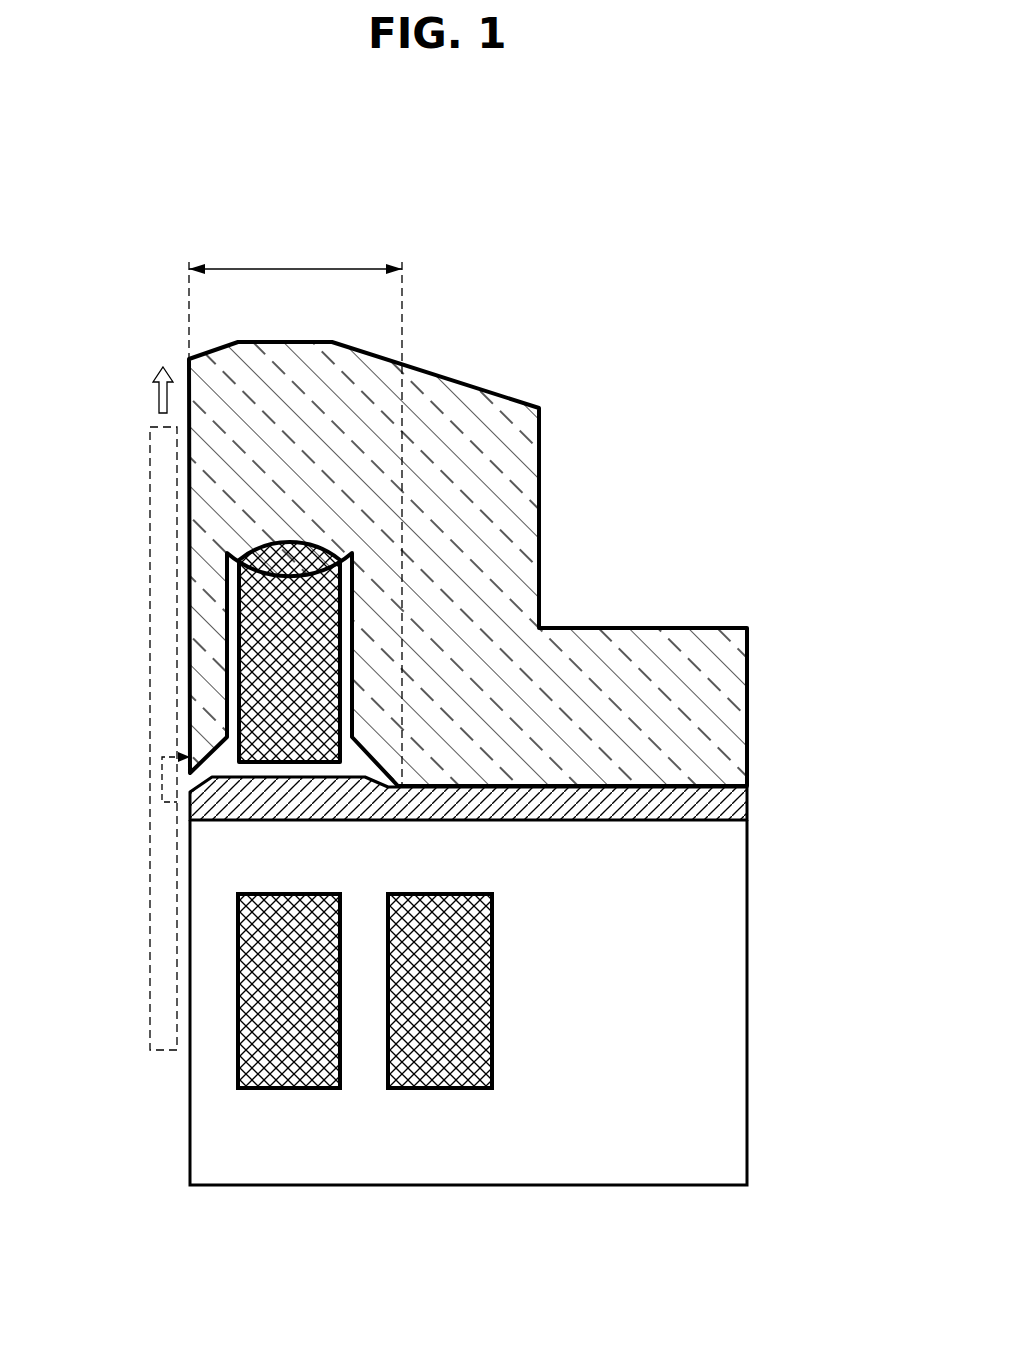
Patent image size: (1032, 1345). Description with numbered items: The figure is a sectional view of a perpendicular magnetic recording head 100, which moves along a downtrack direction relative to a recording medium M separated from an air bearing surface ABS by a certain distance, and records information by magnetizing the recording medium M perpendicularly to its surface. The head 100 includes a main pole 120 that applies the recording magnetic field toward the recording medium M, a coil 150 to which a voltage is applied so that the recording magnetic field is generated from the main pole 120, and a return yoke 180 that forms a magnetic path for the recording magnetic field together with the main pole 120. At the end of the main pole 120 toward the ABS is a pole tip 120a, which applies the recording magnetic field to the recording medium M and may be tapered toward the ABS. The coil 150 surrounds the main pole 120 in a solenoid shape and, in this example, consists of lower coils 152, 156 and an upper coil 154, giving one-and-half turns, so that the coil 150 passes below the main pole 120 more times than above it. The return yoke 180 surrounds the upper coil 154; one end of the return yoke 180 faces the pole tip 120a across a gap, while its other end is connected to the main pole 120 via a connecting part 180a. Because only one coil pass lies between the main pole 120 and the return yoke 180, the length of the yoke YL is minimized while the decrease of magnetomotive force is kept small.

The perpendicular magnetic recording head 100 is at (716, 374).
The main pole 120 is at (727, 808).
The pole tip 120a is at (207, 802).
The coil 150 is at (267, 1066).
The lower coil 152 is at (298, 1076).
The upper coil 154 is at (260, 598).
The lower coil 156 is at (435, 1076).
The return yoke 180 is at (735, 680).
The connecting part 180a is at (660, 785).
The air bearing surface ABS is at (189, 300).
The length of a yoke YL is at (295, 512).
The recording medium M is at (150, 445).